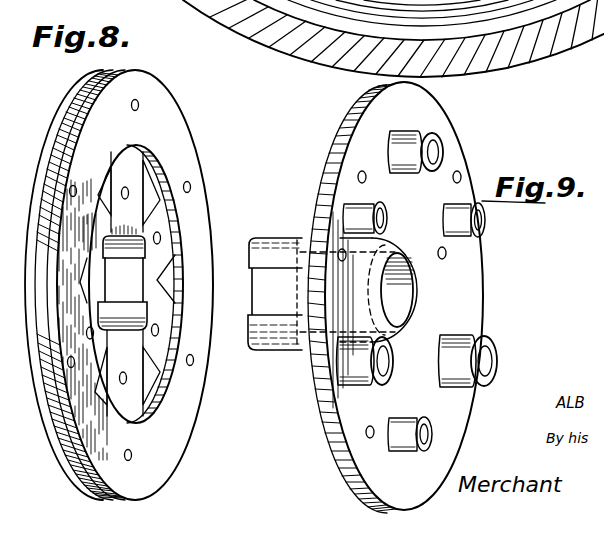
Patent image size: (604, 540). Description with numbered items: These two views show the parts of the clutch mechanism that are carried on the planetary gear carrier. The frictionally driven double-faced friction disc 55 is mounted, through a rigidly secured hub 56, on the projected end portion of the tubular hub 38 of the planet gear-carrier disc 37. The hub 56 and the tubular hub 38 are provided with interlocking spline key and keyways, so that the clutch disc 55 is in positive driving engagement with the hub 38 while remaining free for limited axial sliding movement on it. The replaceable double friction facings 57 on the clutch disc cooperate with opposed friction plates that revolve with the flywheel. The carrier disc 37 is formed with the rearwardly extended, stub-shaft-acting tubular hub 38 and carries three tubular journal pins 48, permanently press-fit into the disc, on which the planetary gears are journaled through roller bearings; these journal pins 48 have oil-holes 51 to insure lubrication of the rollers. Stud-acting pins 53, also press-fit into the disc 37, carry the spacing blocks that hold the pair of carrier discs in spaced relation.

In FIG. 9, the planet gear-carrier disc 37 is at (414, 492).
In FIG. 9, the tubular hub 38 is at (284, 356).
In FIG. 9, the tubular journal pin 48 is at (438, 140).
In FIG. 9, the oil-hole 51 is at (409, 147).
In FIG. 9, the stud-acting pin 53 is at (444, 219).
In FIG. 8, the double-faced friction disc 55 is at (162, 339).
In FIG. 8, the hub 56 is at (133, 276).
In FIG. 8, the friction facing 57 is at (172, 277).